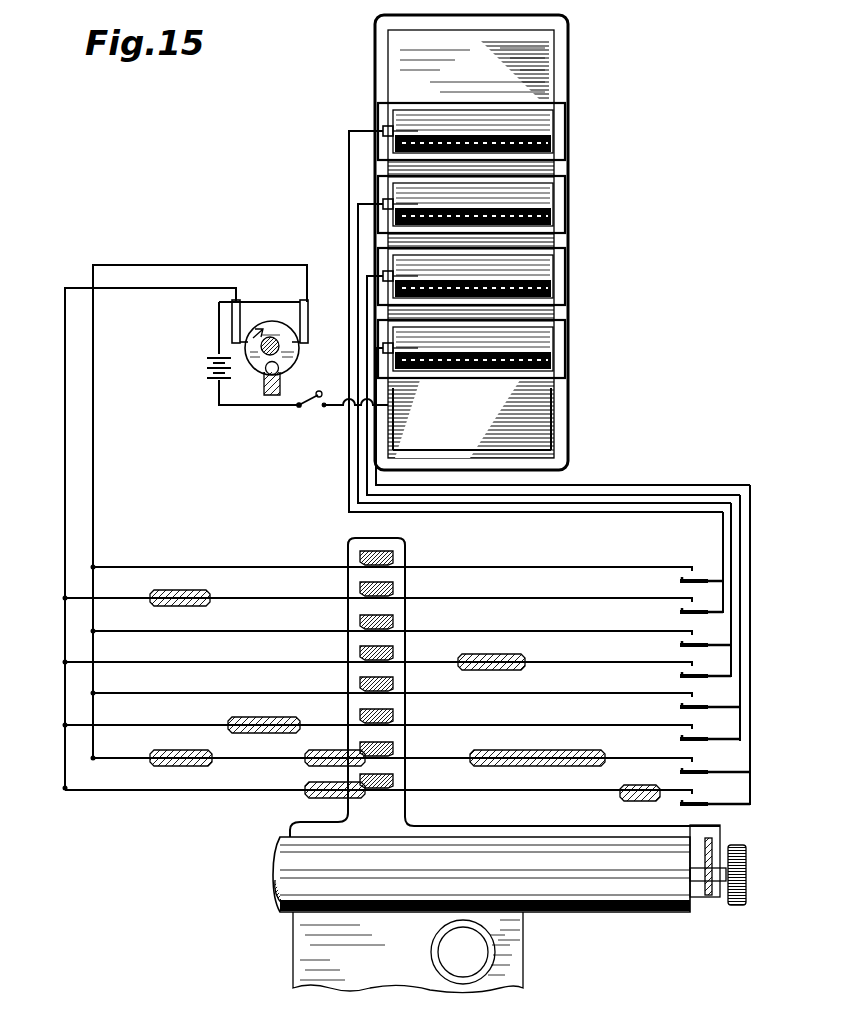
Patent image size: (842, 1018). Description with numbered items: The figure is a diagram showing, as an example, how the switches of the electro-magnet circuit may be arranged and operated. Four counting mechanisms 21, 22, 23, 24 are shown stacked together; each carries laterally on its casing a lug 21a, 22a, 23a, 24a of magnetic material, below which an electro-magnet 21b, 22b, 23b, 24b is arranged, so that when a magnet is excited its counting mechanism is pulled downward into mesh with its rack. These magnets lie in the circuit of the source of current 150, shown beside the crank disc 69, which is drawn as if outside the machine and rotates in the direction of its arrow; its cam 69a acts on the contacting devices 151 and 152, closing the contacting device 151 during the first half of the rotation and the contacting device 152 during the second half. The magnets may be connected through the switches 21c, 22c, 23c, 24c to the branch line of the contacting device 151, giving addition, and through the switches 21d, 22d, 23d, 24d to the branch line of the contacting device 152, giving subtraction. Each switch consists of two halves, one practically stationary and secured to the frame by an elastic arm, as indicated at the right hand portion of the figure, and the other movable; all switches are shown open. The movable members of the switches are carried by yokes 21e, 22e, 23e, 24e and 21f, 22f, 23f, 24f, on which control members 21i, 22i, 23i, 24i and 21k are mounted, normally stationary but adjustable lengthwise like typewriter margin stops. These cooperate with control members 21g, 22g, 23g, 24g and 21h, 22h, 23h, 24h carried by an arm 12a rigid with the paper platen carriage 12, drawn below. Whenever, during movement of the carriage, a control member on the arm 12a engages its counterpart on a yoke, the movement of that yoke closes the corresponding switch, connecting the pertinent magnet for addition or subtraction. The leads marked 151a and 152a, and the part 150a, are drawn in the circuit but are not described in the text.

The paper platen carriage 12 is at (704, 834).
The arm 12a is at (357, 546).
The counting mechanism 21 is at (545, 343).
The counting mechanism 22 is at (545, 270).
The counting mechanism 23 is at (545, 198).
The counting mechanism 24 is at (545, 125).
The lug 21a is at (386, 345).
The electro-magnet 21b is at (384, 355).
The lug 22a is at (386, 273).
The electro-magnet 22b is at (384, 283).
The lug 23a is at (386, 201).
The electro-magnet 23b is at (384, 211).
The lug 24a is at (386, 128).
The electro-magnet 24b is at (384, 138).
The switch 21c is at (686, 798).
The switch 21d is at (686, 766).
The yoke 21e is at (411, 790).
The yoke 21f is at (411, 758).
The control member 21g is at (356, 781).
The control member 21h is at (356, 749).
The control member 21i is at (306, 796).
The control member 21k is at (158, 762).
The switch 22c is at (686, 733).
The switch 22d is at (686, 701).
The yoke 22e is at (411, 725).
The yoke 22f is at (411, 693).
The control member 22g is at (356, 716).
The control member 22h is at (356, 684).
The control member 22i is at (258, 733).
The switch 23c is at (686, 670).
The switch 23d is at (686, 639).
The yoke 23e is at (411, 662).
The yoke 23f is at (411, 631).
The control member 23g is at (356, 653).
The control member 23h is at (356, 622).
The control member 23i is at (505, 670).
The switch 24c is at (686, 606).
The switch 24d is at (686, 575).
The yoke 24e is at (411, 598).
The yoke 24f is at (411, 567).
The control member 24g is at (356, 589).
The control member 24h is at (356, 558).
The control member 24i is at (166, 603).
The crank disc 69 is at (278, 328).
The cam 69a is at (262, 372).
The source of current 150 is at (213, 360).
The switch 150a is at (312, 406).
The contacting device 151 is at (233, 312).
The wire 151a is at (65, 348).
The contacting device 152 is at (303, 305).
The wire 152a is at (93, 352).